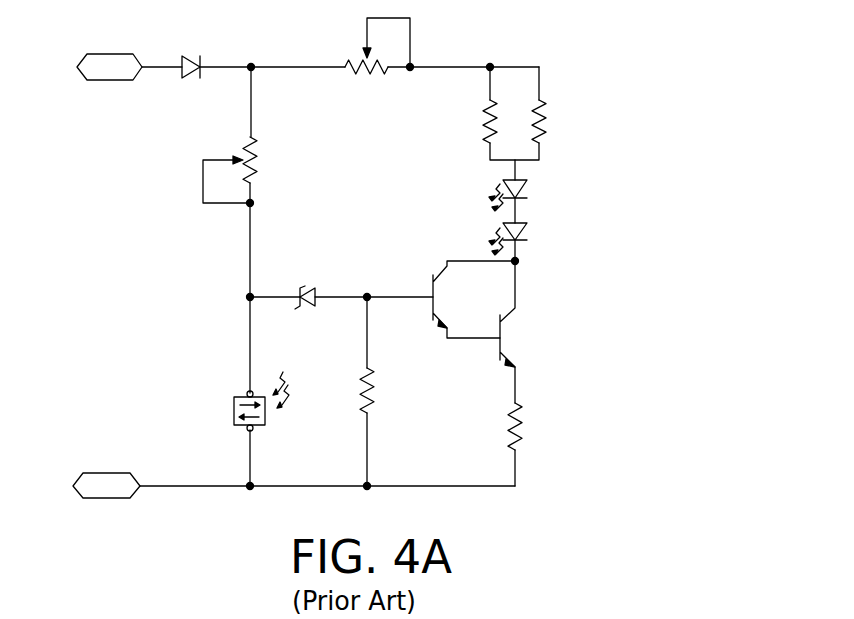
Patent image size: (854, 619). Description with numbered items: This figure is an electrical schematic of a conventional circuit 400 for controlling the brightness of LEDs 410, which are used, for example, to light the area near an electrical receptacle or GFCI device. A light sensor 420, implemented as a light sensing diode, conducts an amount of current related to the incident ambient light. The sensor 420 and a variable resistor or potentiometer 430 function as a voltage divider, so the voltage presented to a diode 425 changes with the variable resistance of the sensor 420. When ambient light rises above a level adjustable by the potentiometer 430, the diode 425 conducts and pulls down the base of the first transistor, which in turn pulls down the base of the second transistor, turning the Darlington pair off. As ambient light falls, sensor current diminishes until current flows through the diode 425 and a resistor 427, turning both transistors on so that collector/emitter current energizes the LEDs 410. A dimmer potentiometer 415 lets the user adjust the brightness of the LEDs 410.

The circuit 400 is at (467, 41).
The LEDs 410 is at (596, 219).
The dimmer potentiometer 415 is at (367, 32).
The light sensor 420 is at (234, 406).
The diode 425 is at (303, 286).
The resistor 427 is at (365, 390).
The potentiometer 430 is at (252, 183).